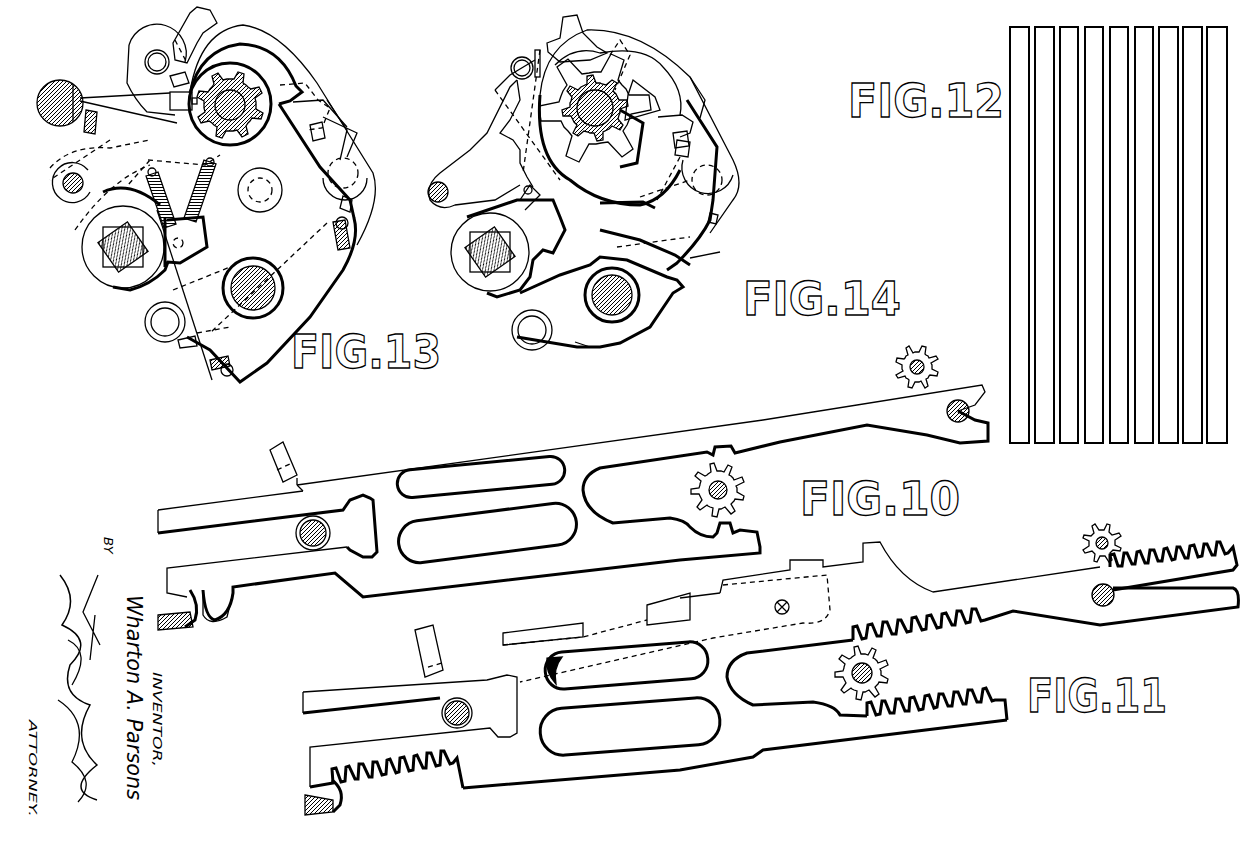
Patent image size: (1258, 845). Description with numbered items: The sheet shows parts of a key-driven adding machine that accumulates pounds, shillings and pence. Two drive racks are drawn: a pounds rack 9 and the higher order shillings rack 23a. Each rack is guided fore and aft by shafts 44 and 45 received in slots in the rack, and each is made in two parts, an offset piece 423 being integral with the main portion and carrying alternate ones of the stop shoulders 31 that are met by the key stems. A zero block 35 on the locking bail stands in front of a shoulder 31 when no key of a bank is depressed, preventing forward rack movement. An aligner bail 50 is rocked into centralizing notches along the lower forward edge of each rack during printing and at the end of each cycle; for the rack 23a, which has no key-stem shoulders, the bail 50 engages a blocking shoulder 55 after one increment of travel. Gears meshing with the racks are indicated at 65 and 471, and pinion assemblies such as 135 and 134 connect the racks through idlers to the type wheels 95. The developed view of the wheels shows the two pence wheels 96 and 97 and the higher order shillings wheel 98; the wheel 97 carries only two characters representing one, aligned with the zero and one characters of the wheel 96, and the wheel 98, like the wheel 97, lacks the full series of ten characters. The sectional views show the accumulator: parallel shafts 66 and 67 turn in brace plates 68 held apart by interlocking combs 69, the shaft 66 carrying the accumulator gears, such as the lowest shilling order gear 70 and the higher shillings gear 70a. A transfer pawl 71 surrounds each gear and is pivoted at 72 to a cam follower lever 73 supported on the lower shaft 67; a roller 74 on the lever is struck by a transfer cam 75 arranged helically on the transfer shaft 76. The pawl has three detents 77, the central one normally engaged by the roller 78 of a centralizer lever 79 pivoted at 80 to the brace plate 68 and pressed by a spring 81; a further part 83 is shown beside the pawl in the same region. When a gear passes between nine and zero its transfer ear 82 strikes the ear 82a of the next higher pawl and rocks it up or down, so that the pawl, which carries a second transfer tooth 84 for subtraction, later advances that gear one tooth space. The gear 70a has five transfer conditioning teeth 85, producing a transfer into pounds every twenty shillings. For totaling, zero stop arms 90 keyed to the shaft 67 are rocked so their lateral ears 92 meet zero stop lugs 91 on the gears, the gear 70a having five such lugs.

In FIG. 11, the drive rack 9 is at (640, 775).
In FIG. 10, the rack 23a is at (497, 450).
In FIG. 10, the stop shoulders 31 is at (300, 488).
In FIG. 11, the stop shoulders 31 is at (503, 637).
In FIG. 10, the zero block 35 is at (292, 452).
In FIG. 11, the zero block 35 is at (440, 645).
In FIG. 10, the shaft 44 is at (953, 423).
In FIG. 11, the shaft 44 is at (1103, 606).
In FIG. 10, the shaft 45 is at (296, 534).
In FIG. 11, the shaft 45 is at (441, 713).
In FIG. 10, the aligner bail 50 is at (185, 632).
In FIG. 11, the aligner bail 50 is at (345, 805).
In FIG. 10, the blocking shoulder 55 is at (212, 625).
In FIG. 13, the gear unit 65 is at (343, 37).
In FIG. 14, the gear unit 65 is at (718, 50).
In FIG. 10, the gear unit 65 is at (678, 494).
In FIG. 11, the gear unit 65 is at (828, 676).
In FIG. 13, the accumulator shaft 66 is at (243, 88).
In FIG. 14, the accumulator shaft 66 is at (632, 122).
In FIG. 10, the accumulator shaft 66 is at (735, 490).
In FIG. 13, the lower accumulator shaft 67 is at (272, 300).
In FIG. 14, the lower accumulator shaft 67 is at (643, 322).
In FIG. 13, the brace plates 68 is at (323, 271).
In FIG. 14, the brace plates 68 is at (674, 318).
In FIG. 13, the interlocking combs 69 is at (85, 128).
In FIG. 13, the cover 70 is at (228, 55).
In FIG. 14, the cover 70 is at (633, 52).
In FIG. 10, the accumulator gear 70a is at (738, 480).
In FIG. 13, the transfer pawl 71 is at (342, 112).
In FIG. 14, the transfer pawl 71 is at (705, 100).
In FIG. 13, the pivot 72 is at (355, 160).
In FIG. 14, the pivot 72 is at (730, 182).
In FIG. 13, the cam follower lever 73 is at (358, 208).
In FIG. 14, the cam follower lever 73 is at (740, 224).
In FIG. 13, the roller 74 is at (150, 340).
In FIG. 14, the roller 74 is at (534, 350).
In FIG. 13, the transfer cams 75 is at (163, 285).
In FIG. 14, the transfer cams 75 is at (562, 242).
In FIG. 13, the transfer shaft 76 is at (112, 278).
In FIG. 14, the transfer shaft 76 is at (465, 240).
In FIG. 13, the detents 77 is at (205, 28).
In FIG. 14, the detents 77 is at (556, 35).
In FIG. 13, the roller 78 is at (146, 52).
In FIG. 14, the roller 78 is at (511, 66).
In FIG. 14, the centralizer lever 79 is at (488, 150).
In FIG. 13, the pivot 80 is at (68, 198).
In FIG. 14, the pivot 80 is at (438, 181).
In FIG. 13, the spring 81 is at (80, 226).
In FIG. 14, the spring 81 is at (520, 198).
In FIG. 13, the transfer ear 82 is at (150, 98).
In FIG. 13, the ear 82a is at (192, 30).
In FIG. 14, the ear 82a is at (535, 52).
In FIG. 13, the detent 83 is at (318, 99).
In FIG. 14, the detent 83 is at (690, 113).
In FIG. 13, the second transfer tooth 84 is at (270, 160).
In FIG. 14, the second transfer tooth 84 is at (636, 172).
In FIG. 14, the transfer conditioning teeth 85 is at (657, 82).
In FIG. 13, the zero stop arms 90 is at (345, 135).
In FIG. 14, the zero stop arms 90 is at (720, 150).
In FIG. 13, the zero stop lugs 91 is at (300, 90).
In FIG. 14, the zero stop lugs 91 is at (614, 45).
In FIG. 13, the lateral ears 92 is at (358, 120).
In FIG. 14, the lateral ears 92 is at (708, 128).
In FIG. 12, the type wheels 95 is at (1105, 457).
In FIG. 12, the pence type wheel 96 is at (1217, 443).
In FIG. 12, the higher order pence type wheel 97 is at (1190, 443).
In FIG. 12, the higher order shillings wheel 98 is at (1143, 443).
In FIG. 11, the pinion assembly 134 is at (1082, 540).
In FIG. 10, the pinion assembly 135 is at (917, 345).
In FIG. 11, the offset piece 423 is at (647, 608).
In FIG. 11, the gear 471 is at (890, 680).